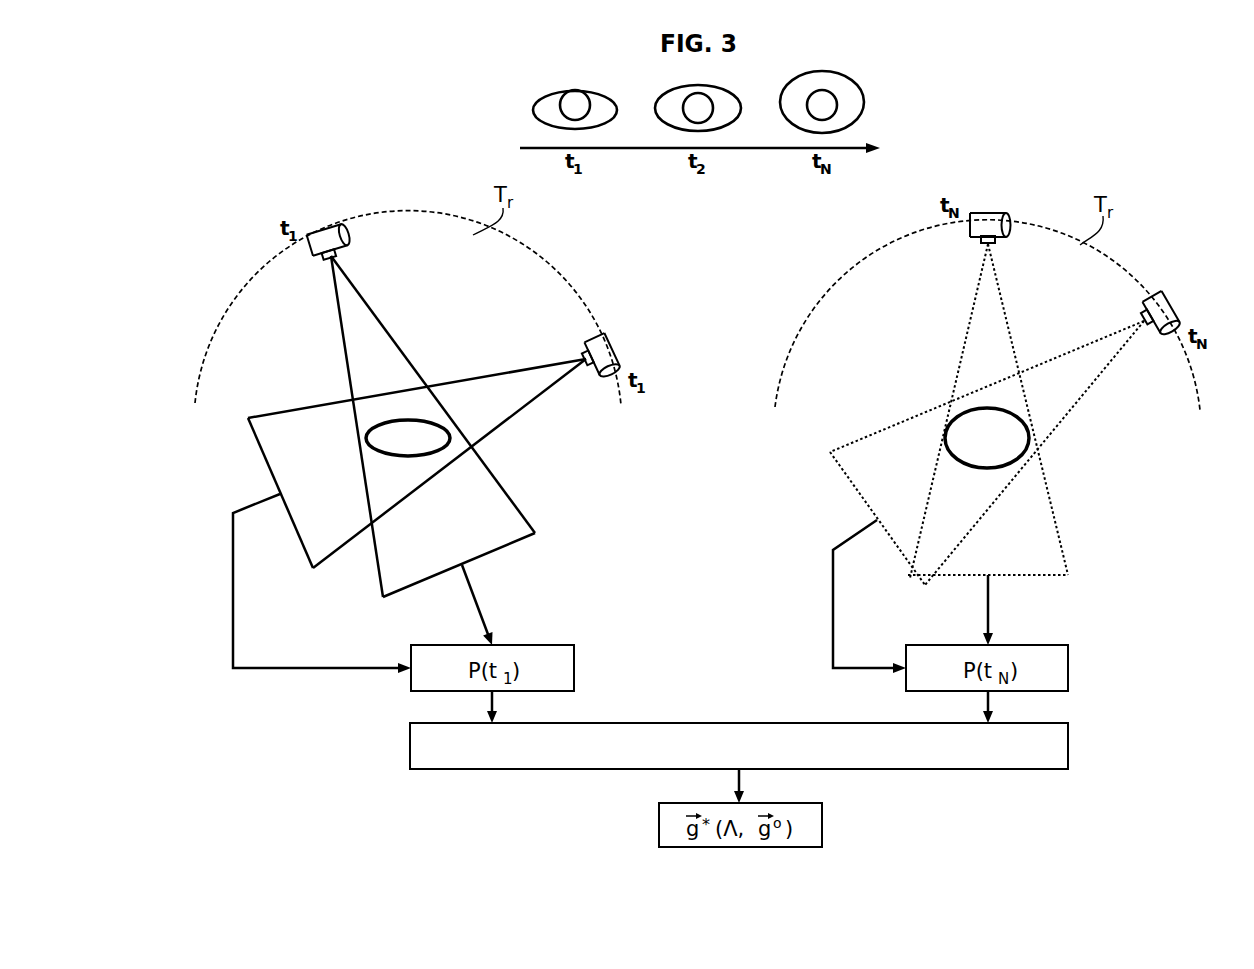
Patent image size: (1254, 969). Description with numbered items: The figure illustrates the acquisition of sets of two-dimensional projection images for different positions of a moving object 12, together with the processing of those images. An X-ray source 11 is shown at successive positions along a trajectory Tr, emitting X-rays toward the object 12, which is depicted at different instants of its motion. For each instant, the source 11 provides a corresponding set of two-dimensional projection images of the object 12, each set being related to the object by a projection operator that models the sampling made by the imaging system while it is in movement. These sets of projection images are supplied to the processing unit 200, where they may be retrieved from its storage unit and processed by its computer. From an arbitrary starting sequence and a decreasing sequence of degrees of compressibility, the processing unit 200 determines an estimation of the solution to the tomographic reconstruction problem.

The X-ray source 11 is at (325, 236).
The object 12 is at (397, 439).
The processing unit 200 is at (410, 748).